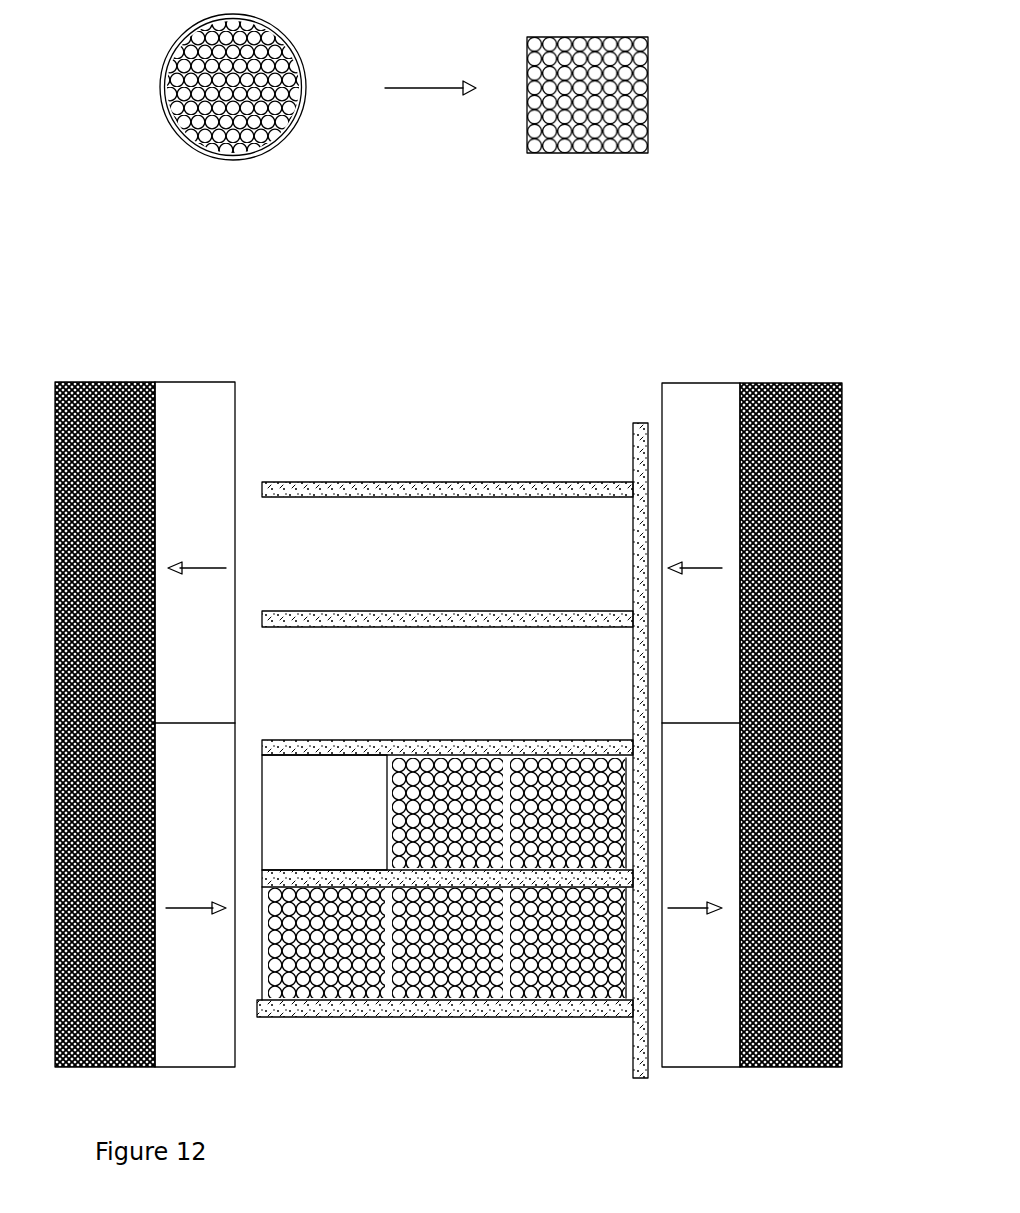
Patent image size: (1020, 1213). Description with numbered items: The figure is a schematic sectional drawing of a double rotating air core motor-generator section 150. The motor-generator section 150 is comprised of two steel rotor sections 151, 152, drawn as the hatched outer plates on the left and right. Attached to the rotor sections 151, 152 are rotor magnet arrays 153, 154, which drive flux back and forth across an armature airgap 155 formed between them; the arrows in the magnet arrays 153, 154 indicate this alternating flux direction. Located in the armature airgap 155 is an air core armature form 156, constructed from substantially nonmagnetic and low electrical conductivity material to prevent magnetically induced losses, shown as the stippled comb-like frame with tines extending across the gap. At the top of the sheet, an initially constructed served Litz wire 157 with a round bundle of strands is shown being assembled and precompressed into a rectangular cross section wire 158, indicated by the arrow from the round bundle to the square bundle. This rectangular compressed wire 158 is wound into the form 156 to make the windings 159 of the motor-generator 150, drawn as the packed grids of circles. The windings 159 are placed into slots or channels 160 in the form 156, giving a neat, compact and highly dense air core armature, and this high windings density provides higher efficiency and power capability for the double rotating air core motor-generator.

The motor-generator section 150 is at (150, 300).
The steel rotor section 151 is at (103, 382).
The steel rotor section 152 is at (785, 383).
The rotor magnet array 153 is at (204, 382).
The rotor magnet array 154 is at (698, 383).
The armature airgap 155 is at (371, 390).
The air core armature form 156 is at (543, 482).
The round fiber bundle 157 is at (163, 74).
The rectangular cross section wire 158 is at (598, 155).
The windings 159 is at (388, 816).
The slots or channels 160 is at (338, 690).